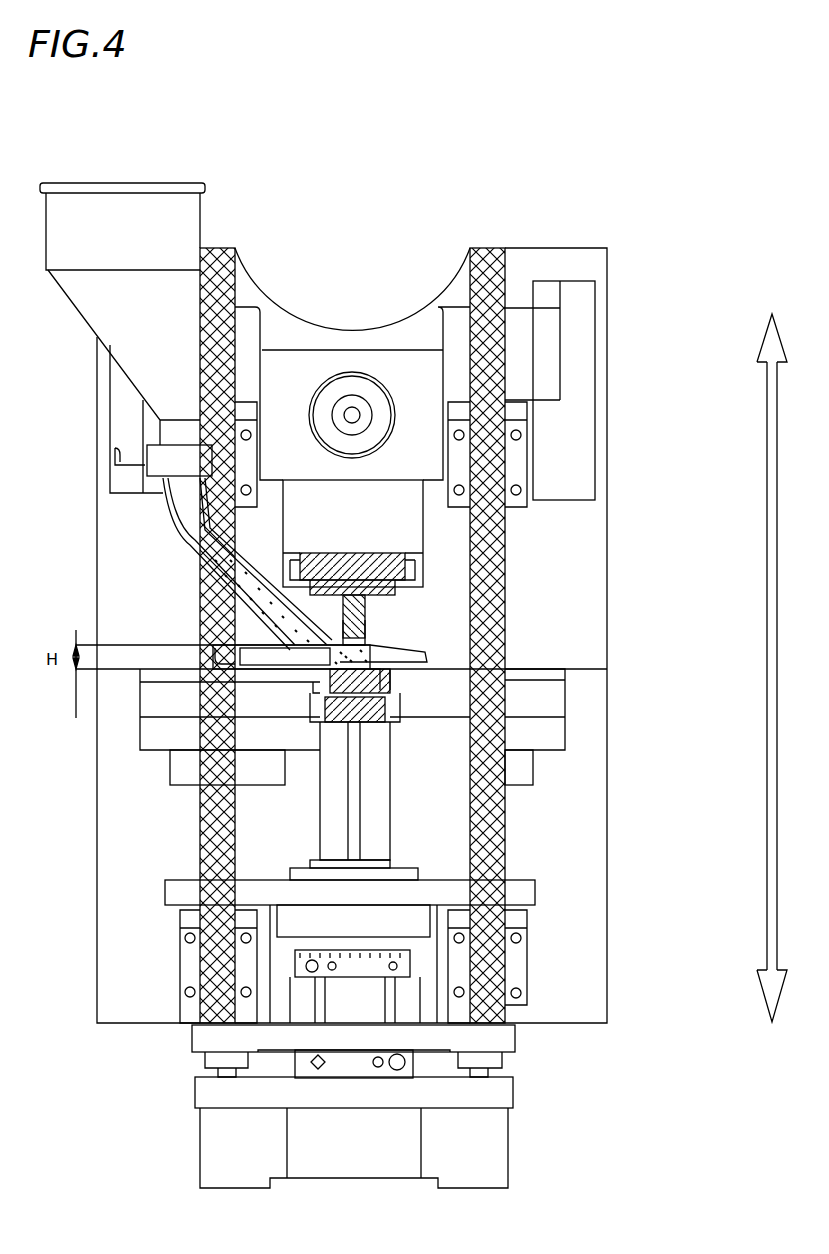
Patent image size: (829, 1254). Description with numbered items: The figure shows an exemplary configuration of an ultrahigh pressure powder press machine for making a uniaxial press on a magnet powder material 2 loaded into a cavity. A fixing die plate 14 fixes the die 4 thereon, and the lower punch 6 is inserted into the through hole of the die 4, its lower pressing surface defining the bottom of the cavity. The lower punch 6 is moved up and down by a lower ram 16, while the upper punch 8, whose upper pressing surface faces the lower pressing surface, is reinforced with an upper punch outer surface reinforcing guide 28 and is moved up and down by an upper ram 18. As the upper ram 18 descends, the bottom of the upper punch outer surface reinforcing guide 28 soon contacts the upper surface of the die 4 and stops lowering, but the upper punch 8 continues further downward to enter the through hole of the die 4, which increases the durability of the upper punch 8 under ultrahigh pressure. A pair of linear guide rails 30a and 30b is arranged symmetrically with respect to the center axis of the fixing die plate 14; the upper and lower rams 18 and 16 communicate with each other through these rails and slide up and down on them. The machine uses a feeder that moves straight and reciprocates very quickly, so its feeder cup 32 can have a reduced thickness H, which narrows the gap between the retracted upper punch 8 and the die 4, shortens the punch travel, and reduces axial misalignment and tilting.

The magnet powder material 2 is at (186, 547).
The die 4 is at (420, 672).
The lower punch 6 is at (355, 738).
The upper punch 8 is at (358, 530).
The fixing die plate 14 is at (540, 705).
The lower ram 16 is at (505, 955).
The upper ram 18 is at (525, 343).
The upper punch outer surface reinforcing guide 28 is at (385, 612).
The linear guide rail 30a is at (214, 248).
The linear guide rail 30b is at (485, 248).
The feeder cup 32 is at (200, 632).